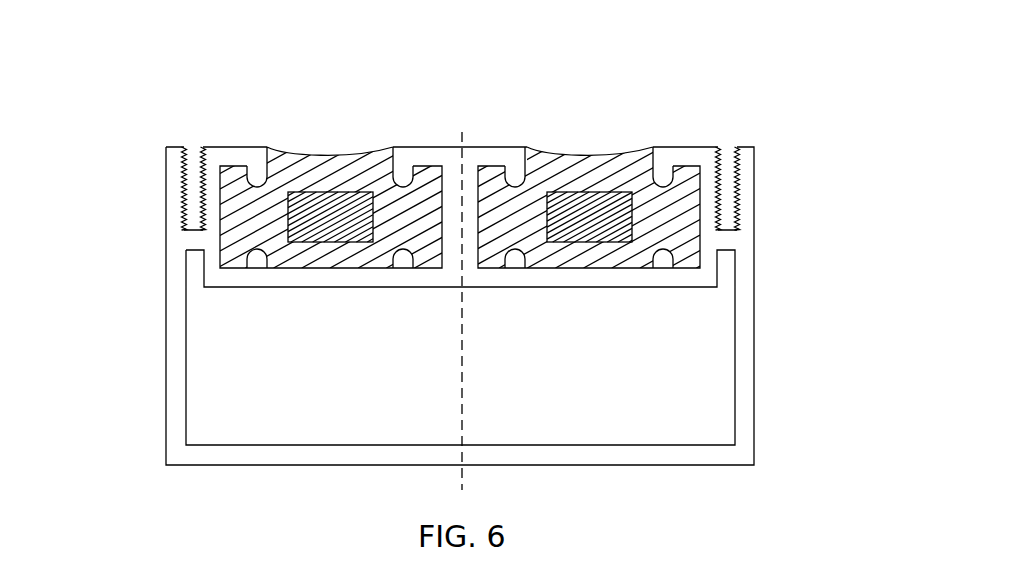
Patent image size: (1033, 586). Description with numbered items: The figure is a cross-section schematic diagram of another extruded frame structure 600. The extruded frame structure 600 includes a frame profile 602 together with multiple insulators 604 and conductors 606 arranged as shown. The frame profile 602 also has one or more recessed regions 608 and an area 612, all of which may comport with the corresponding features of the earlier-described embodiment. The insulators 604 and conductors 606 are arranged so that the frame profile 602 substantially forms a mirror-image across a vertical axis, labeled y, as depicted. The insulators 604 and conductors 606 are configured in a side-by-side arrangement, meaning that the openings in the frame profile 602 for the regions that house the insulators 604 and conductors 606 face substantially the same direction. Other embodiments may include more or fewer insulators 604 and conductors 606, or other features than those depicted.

The extruded frame structure 600 is at (749, 100).
The frame profile 602 is at (177, 305).
The insulators 604 is at (560, 153).
The conductors 606 is at (587, 191).
The recessed regions 608 is at (190, 183).
The area 612 is at (449, 365).